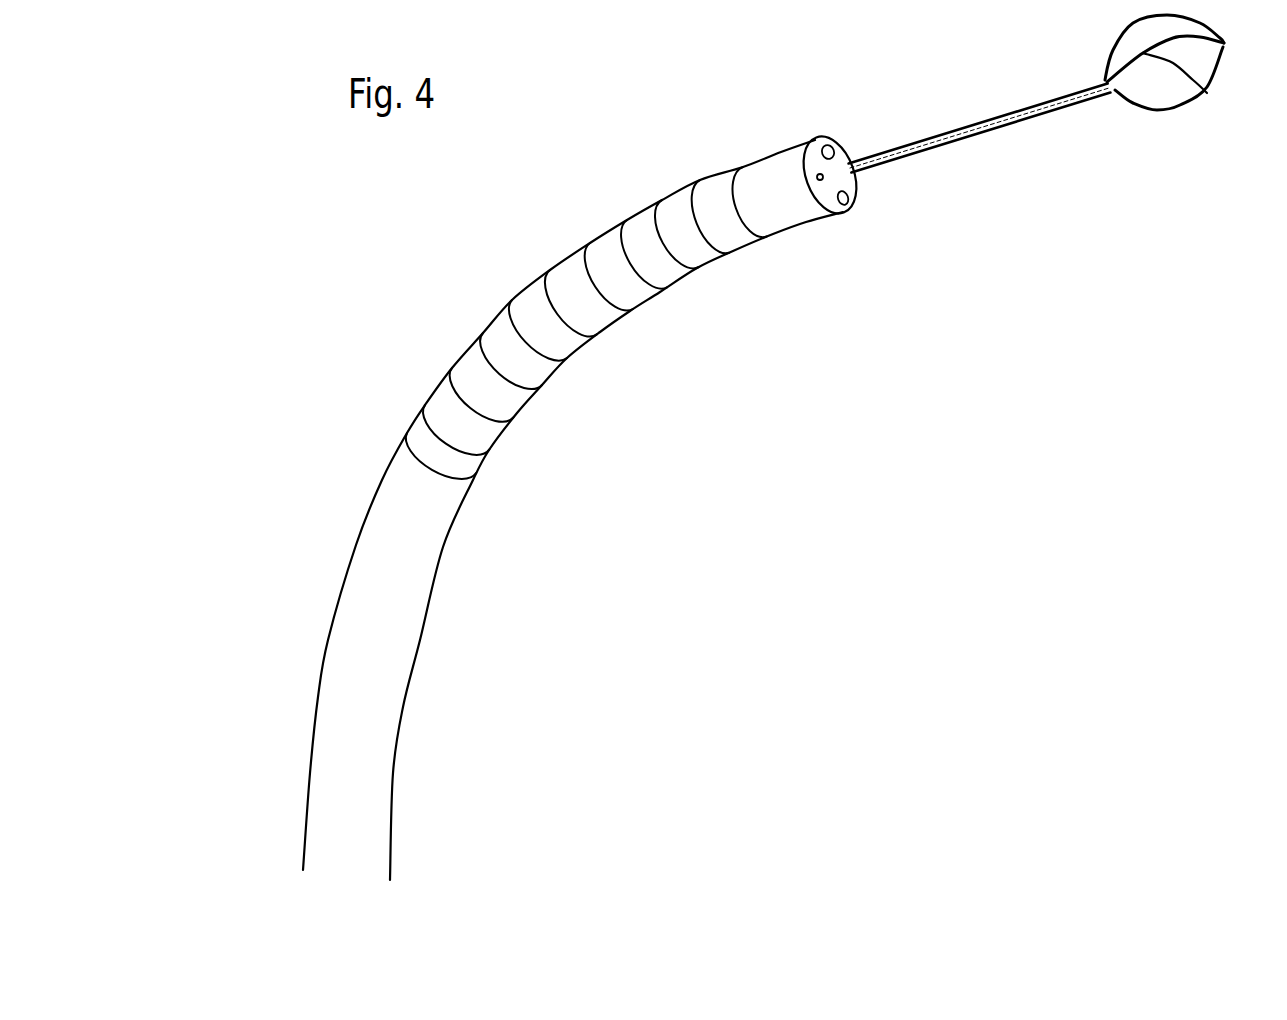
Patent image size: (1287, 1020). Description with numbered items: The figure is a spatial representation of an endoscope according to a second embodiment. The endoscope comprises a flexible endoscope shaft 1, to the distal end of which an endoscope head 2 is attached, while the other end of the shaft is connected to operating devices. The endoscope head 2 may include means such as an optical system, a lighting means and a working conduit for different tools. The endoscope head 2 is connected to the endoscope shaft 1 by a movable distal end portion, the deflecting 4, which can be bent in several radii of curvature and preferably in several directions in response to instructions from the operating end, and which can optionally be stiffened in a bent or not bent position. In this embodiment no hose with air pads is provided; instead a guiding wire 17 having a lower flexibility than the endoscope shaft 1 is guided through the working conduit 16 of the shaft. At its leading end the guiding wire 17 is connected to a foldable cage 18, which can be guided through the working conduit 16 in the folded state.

The endoscope shaft 1 is at (387, 618).
The endoscope head 2 is at (787, 190).
The deflecting 4 is at (513, 333).
The working conduit 16 is at (842, 212).
The guiding wire 17 is at (993, 110).
The foldable cage 18 is at (1207, 93).